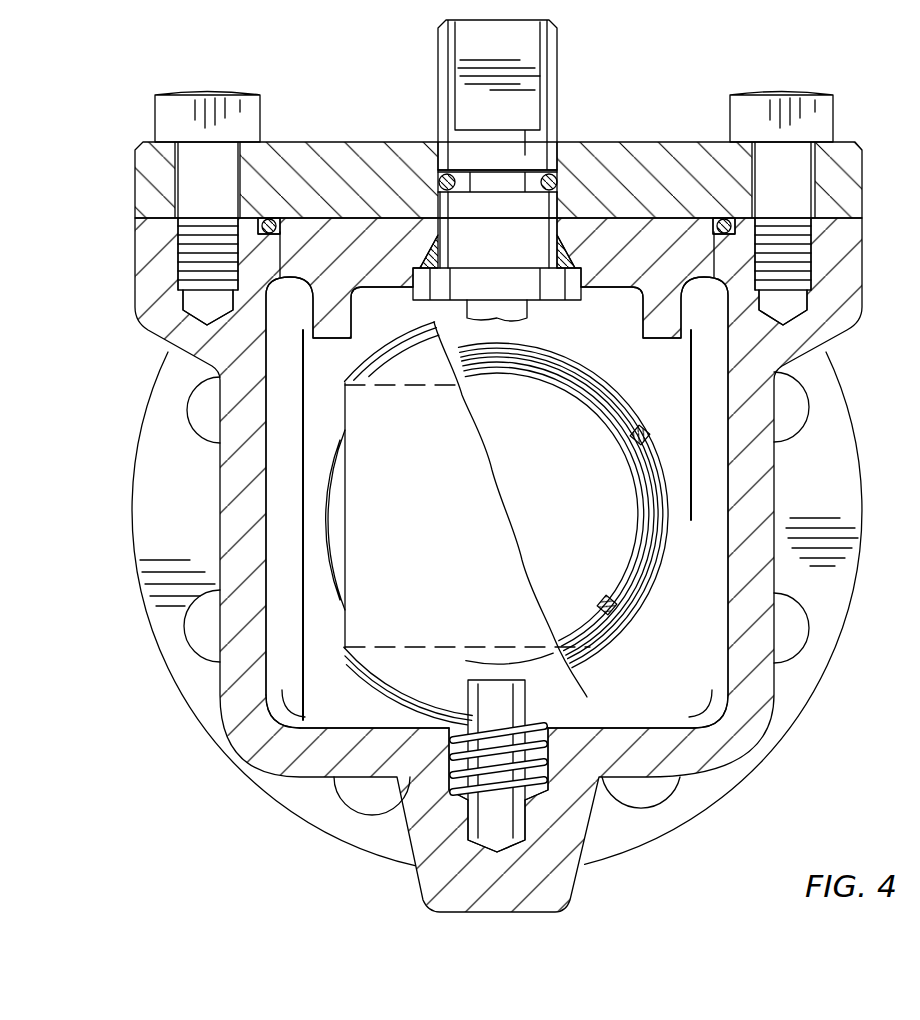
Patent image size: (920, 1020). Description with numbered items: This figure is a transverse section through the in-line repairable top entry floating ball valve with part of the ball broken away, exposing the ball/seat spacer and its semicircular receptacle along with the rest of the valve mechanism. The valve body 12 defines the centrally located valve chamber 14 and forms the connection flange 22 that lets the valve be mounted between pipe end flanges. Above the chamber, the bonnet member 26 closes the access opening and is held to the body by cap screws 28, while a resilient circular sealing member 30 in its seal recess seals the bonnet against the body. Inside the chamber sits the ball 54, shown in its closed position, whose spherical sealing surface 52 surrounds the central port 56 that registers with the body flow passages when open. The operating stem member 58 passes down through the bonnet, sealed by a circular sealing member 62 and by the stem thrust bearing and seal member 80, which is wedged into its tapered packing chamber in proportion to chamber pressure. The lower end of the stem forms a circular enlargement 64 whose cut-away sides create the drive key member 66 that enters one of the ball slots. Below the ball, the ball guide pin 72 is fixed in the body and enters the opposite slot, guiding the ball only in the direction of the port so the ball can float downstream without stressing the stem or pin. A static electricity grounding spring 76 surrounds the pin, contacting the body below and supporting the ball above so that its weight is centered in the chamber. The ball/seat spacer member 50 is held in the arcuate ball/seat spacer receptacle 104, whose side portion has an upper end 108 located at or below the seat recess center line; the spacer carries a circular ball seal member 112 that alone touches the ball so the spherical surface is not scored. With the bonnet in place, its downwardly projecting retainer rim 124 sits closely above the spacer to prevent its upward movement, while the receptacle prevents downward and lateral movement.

The valve body 12 is at (235, 510).
The valve chamber 14 is at (245, 733).
The connection flange 22 is at (845, 490).
The bonnet member 26 is at (340, 165).
The cap screws 28 is at (833, 108).
The circular sealing member 30 is at (720, 218).
The ball/seat spacer member 50 is at (635, 405).
The spherical sealing surface 52 is at (375, 680).
The ball 54 is at (508, 548).
The central port 56 is at (531, 486).
The operating stem member 58 is at (557, 50).
The circular sealing member 62 is at (553, 180).
The circular enlargement 64 is at (588, 285).
The drive key member 66 is at (513, 314).
The ball guide pin 72 is at (575, 690).
The static electricity grounding spring 76 is at (408, 843).
The stem thrust bearing and seal member 80 is at (560, 265).
The ball/seat spacer receptacle 104 is at (633, 613).
The upper end of side portion of semi-circular recess 108 is at (782, 535).
The circular ball seal member 112 is at (640, 463).
The retainer rim 124 is at (700, 352).